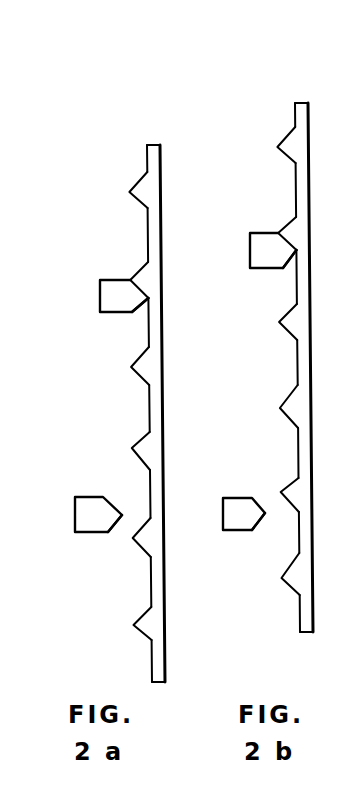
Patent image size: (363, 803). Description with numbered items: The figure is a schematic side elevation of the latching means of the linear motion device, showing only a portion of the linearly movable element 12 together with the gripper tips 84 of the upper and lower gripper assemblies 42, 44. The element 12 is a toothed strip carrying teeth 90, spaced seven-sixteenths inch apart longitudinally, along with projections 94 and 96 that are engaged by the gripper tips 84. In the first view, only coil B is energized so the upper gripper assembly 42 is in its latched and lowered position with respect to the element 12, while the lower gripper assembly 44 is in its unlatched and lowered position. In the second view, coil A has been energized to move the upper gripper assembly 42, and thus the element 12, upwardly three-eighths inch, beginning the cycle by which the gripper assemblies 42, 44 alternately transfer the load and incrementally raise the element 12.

In FIG. 2a, the linearly movable element 12 is at (164, 412).
In FIG. 2b, the linearly movable element 12 is at (313, 410).
In FIG. 2a, the upper gripper assembly 42 is at (113, 276).
In FIG. 2b, the upper gripper assembly 42 is at (262, 229).
In FIG. 2a, the lower gripper assembly 44 is at (91, 492).
In FIG. 2b, the lower gripper assembly 44 is at (248, 493).
In FIG. 2a, the gripper tip 84 is at (140, 304).
In FIG. 2b, the gripper tip 84 is at (285, 268).
In FIG. 2a, the teeth 90 is at (141, 175).
In FIG. 2b, the teeth 90 is at (289, 130).
In FIG. 2a, the projection 94 is at (140, 550).
In FIG. 2b, the projection 94 is at (291, 479).
In FIG. 2a, the projection 96 is at (139, 380).
In FIG. 2b, the projection 96 is at (287, 330).